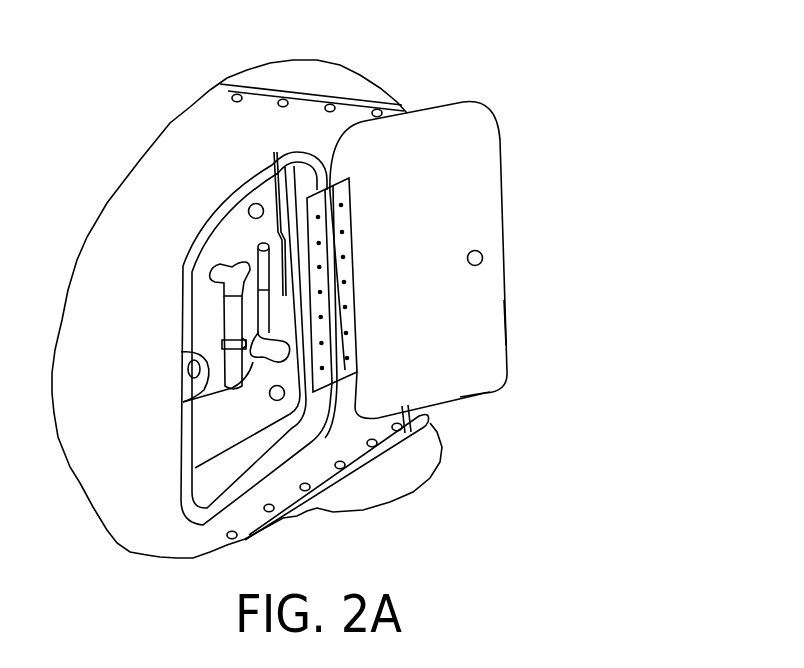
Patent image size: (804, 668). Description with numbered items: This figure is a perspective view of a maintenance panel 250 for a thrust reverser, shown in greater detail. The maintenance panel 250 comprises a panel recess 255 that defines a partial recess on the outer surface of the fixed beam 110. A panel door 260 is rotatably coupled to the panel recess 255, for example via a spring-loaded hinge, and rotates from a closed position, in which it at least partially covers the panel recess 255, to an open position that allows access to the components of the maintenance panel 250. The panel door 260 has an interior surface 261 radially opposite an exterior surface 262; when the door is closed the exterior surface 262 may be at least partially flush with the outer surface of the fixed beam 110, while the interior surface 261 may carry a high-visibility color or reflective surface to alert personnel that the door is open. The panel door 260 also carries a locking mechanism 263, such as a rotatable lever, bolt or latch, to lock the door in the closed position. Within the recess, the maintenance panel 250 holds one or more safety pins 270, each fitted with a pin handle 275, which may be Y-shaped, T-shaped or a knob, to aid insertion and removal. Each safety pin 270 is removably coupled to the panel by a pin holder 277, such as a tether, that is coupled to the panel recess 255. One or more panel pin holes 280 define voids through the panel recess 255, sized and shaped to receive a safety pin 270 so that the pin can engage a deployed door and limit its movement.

The fixed beam 110 is at (109, 368).
The maintenance panel 250 is at (493, 221).
The panel recess 255 is at (183, 493).
The panel door 260 is at (454, 259).
The interior surface 261 is at (492, 370).
The exterior surface 262 is at (505, 322).
The locking mechanism 263 is at (483, 258).
The safety pin 270 is at (258, 257).
The pin handle 275 is at (210, 273).
The pin holder 277 is at (175, 362).
The panel pin hole 280 is at (249, 208).